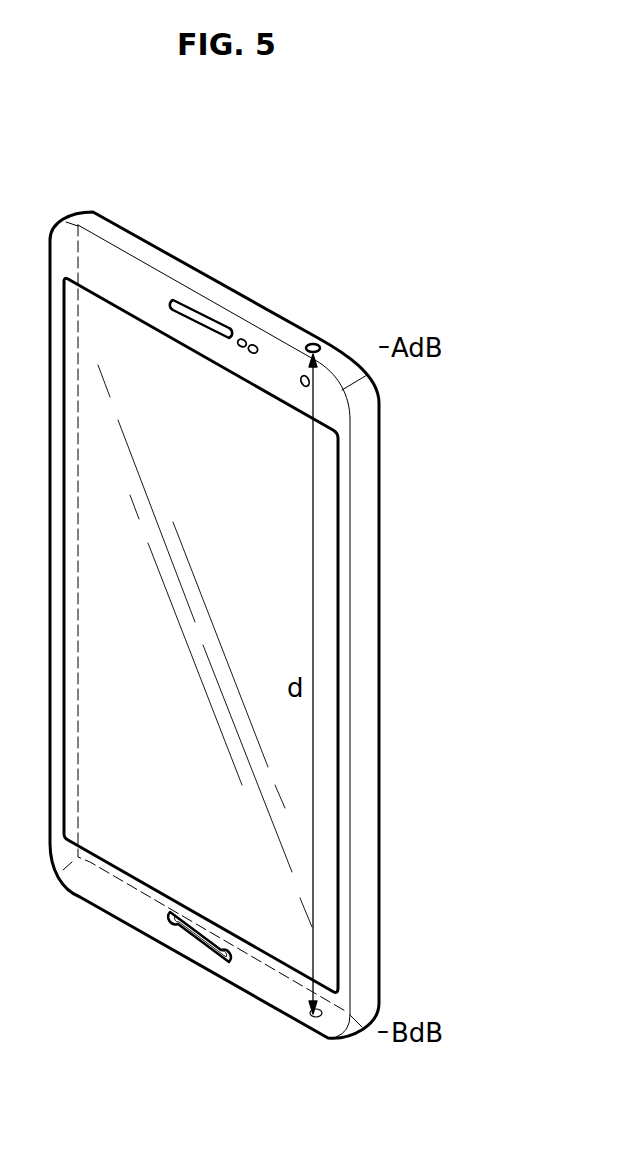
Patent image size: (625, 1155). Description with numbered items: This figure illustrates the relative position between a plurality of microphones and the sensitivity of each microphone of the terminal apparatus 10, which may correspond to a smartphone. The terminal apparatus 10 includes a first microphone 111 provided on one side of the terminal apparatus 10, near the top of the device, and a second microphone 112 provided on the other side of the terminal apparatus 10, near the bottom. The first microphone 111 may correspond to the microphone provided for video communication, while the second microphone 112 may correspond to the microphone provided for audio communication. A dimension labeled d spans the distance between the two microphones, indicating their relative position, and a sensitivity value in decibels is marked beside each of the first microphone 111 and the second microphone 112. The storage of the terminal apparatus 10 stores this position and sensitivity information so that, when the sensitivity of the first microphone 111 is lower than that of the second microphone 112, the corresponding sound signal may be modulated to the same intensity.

The terminal apparatus 10 is at (108, 224).
The first microphone 111 is at (312, 341).
The second microphone 112 is at (302, 1020).